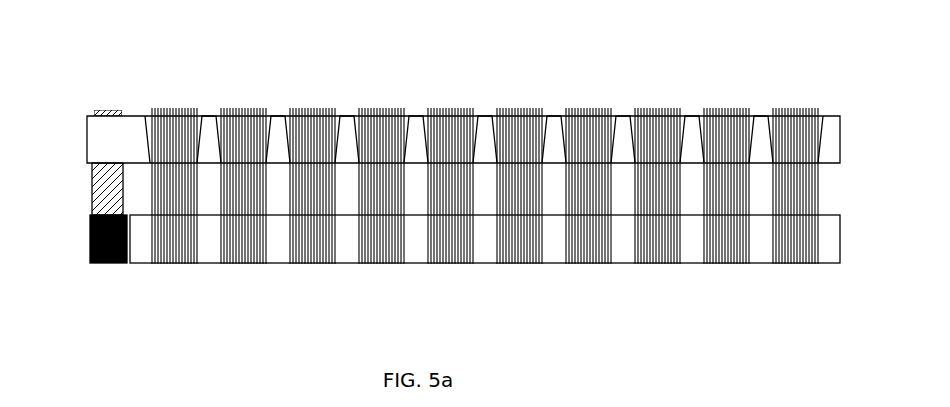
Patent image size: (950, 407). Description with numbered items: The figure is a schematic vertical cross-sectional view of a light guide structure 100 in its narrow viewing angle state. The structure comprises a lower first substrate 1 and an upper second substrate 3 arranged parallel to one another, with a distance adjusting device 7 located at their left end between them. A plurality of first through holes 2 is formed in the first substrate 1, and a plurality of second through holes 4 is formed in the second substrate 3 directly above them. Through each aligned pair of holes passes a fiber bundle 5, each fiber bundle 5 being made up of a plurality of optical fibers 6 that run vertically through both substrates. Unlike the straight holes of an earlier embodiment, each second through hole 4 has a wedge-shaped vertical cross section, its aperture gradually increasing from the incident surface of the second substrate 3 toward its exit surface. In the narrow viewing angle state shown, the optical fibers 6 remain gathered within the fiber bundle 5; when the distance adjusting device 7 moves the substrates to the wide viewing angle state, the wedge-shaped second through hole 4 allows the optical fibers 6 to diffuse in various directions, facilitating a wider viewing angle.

The light guide structure 100 is at (72, 46).
The first substrate 1 is at (840, 247).
The first through hole 2 is at (583, 262).
The second substrate 3 is at (840, 123).
The second through hole 4 is at (578, 130).
The fiber bundle 5 is at (288, 105).
The optical fiber 6 is at (402, 112).
The distance adjusting device 7 is at (88, 216).